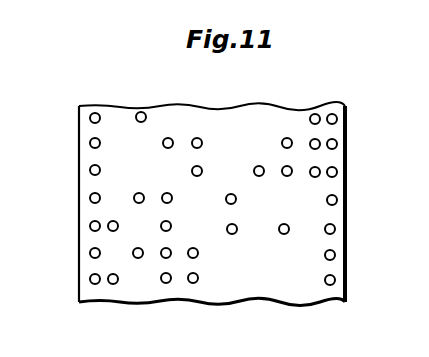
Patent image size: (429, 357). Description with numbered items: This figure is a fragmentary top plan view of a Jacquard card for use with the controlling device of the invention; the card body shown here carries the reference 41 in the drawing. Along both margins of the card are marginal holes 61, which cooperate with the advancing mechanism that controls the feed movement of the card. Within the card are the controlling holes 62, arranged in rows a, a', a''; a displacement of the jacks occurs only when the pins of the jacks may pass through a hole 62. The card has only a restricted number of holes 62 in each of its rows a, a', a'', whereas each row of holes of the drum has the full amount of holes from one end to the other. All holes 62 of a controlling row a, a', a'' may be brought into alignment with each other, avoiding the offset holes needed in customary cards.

The plate 41 is at (272, 290).
The marginal holes 61 is at (90, 119).
The holes 62 is at (194, 139).
The row of holes a is at (355, 144).
The row of holes a' is at (356, 173).
The row of holes a'' is at (358, 200).